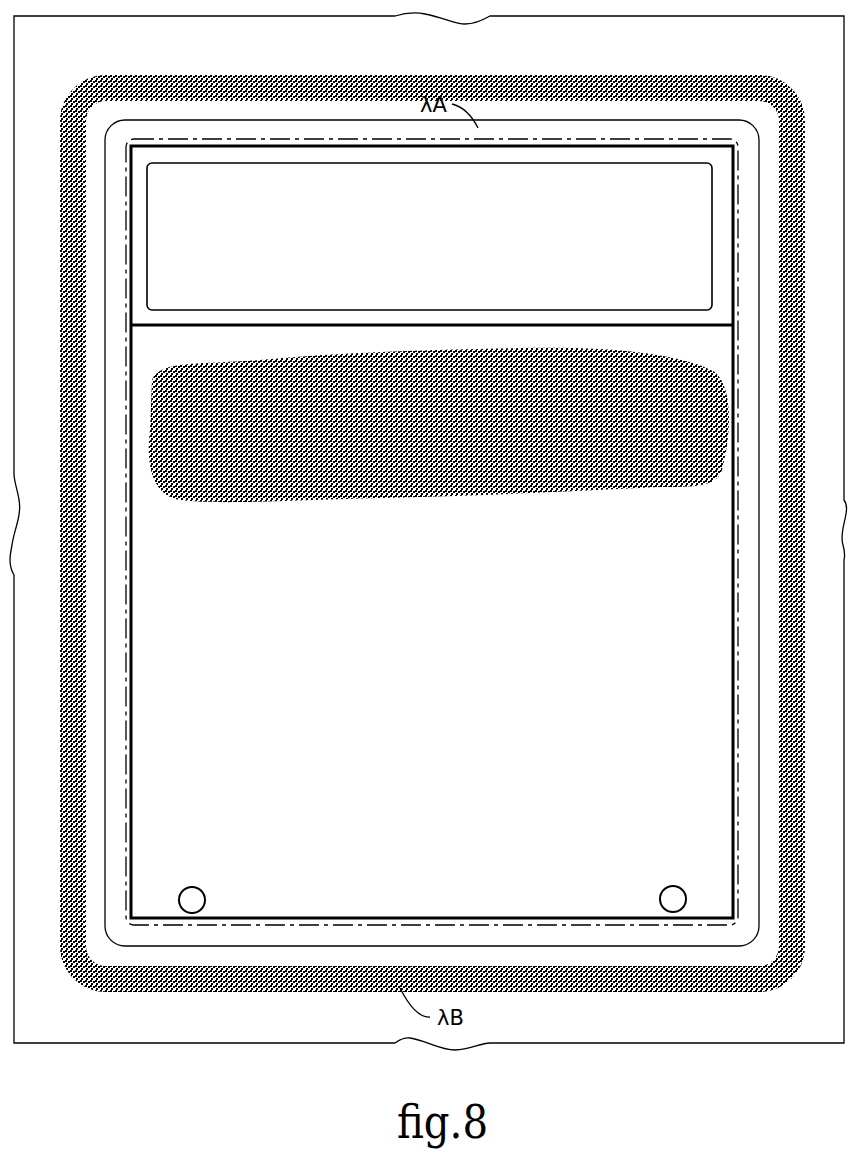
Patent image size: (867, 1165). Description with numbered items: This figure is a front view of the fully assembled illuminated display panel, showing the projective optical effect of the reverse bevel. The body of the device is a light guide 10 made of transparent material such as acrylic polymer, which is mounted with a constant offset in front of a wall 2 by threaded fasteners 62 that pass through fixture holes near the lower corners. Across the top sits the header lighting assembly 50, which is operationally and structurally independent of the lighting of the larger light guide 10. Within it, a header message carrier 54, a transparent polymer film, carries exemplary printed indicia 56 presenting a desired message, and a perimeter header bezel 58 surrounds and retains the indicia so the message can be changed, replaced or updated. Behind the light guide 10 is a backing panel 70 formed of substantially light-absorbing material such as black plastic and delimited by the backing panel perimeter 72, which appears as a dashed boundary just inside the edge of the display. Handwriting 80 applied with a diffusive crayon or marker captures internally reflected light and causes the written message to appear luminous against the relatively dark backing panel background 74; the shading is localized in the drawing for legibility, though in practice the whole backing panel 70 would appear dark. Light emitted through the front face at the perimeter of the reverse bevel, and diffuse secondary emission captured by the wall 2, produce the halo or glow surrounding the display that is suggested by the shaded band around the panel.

The wall 2 is at (813, 55).
The light guide 10 is at (567, 944).
The header lighting assembly 50 is at (144, 326).
The header message carrier 54 is at (677, 286).
The printed indicia 56 is at (617, 214).
The perimeter header bezel 58 is at (272, 327).
The threaded fastener 62 is at (207, 899).
The backing panel 70 is at (507, 669).
The backing panel perimeter 72 is at (391, 917).
The backing panel background 74 is at (562, 468).
The handwriting 80 is at (585, 388).